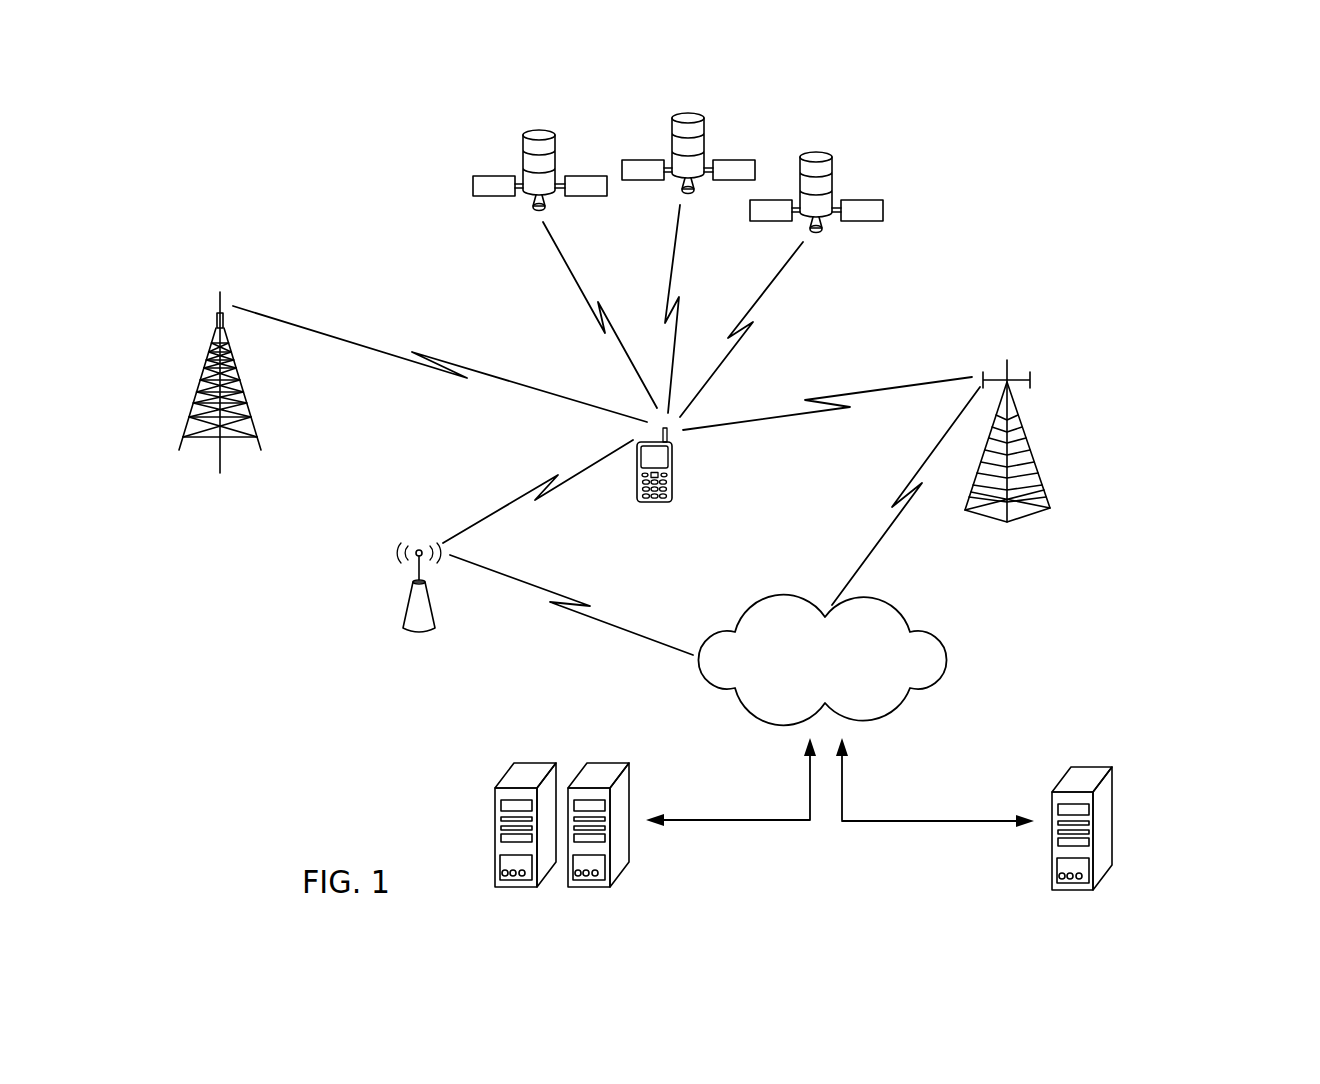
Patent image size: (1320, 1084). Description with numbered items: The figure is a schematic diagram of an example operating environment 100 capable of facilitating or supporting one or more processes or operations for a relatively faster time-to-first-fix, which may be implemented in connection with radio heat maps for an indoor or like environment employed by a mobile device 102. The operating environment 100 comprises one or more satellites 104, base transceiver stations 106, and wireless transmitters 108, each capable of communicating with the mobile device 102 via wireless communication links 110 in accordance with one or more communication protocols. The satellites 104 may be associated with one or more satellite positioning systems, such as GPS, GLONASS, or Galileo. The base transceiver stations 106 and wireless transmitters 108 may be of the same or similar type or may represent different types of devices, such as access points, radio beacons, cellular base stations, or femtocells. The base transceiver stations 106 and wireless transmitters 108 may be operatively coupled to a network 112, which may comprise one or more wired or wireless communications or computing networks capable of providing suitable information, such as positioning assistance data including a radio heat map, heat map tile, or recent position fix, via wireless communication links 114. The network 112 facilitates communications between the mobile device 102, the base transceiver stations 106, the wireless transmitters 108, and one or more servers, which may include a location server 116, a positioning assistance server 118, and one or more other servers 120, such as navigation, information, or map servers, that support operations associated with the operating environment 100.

The operating environment 100 is at (1126, 148).
The mobile device 102 is at (673, 478).
The satellites 104 is at (541, 128).
The base transceiver stations 106 is at (207, 375).
The wireless transmitters 108 is at (411, 600).
The wireless communication links 110 is at (570, 277).
The network 112 is at (950, 650).
The wireless communication links 114 is at (566, 596).
The location server 116 is at (530, 762).
The positioning assistance server 118 is at (600, 762).
The other servers 120 is at (1134, 832).